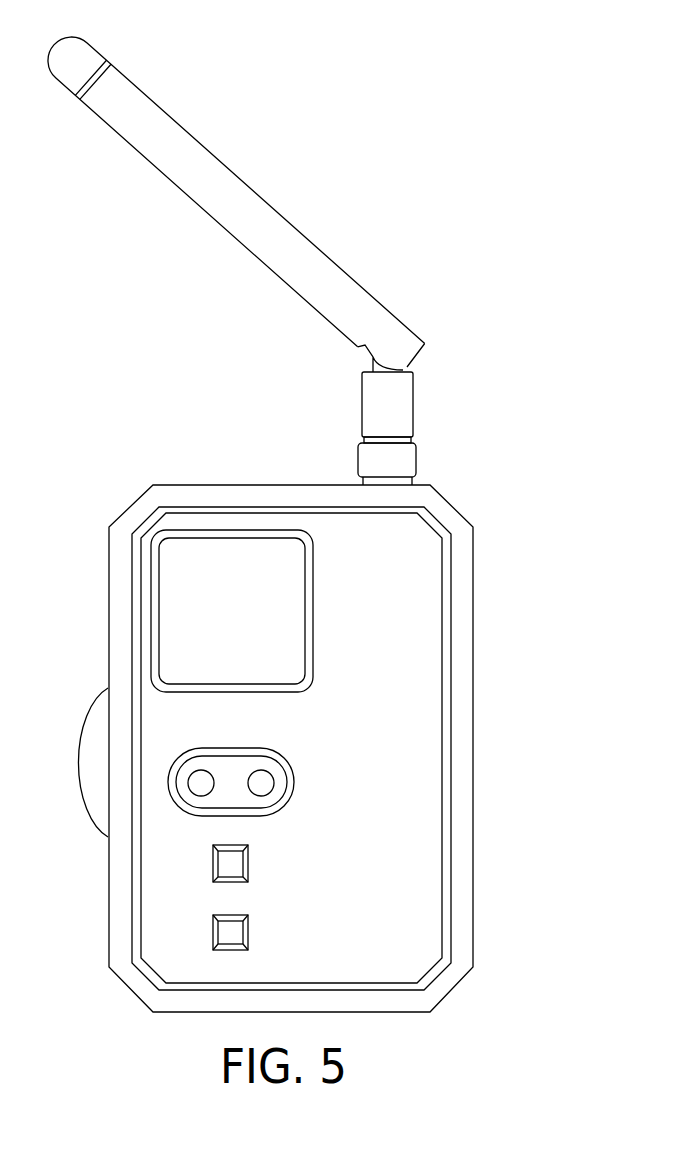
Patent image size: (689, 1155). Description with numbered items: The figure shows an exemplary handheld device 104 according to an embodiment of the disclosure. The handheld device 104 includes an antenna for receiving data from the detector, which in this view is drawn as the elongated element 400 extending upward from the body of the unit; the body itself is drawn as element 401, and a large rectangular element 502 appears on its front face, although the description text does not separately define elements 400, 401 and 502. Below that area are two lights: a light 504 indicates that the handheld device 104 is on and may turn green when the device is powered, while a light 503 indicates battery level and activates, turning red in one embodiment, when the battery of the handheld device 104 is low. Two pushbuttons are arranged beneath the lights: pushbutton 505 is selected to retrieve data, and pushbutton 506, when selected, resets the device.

The handheld device 104 is at (343, 88).
The antenna 400 is at (233, 216).
The housing 401 is at (482, 632).
The display 502 is at (313, 605).
The light 503 is at (261, 771).
The light 504 is at (201, 771).
The pushbutton 505 is at (249, 858).
The pushbutton 506 is at (249, 928).